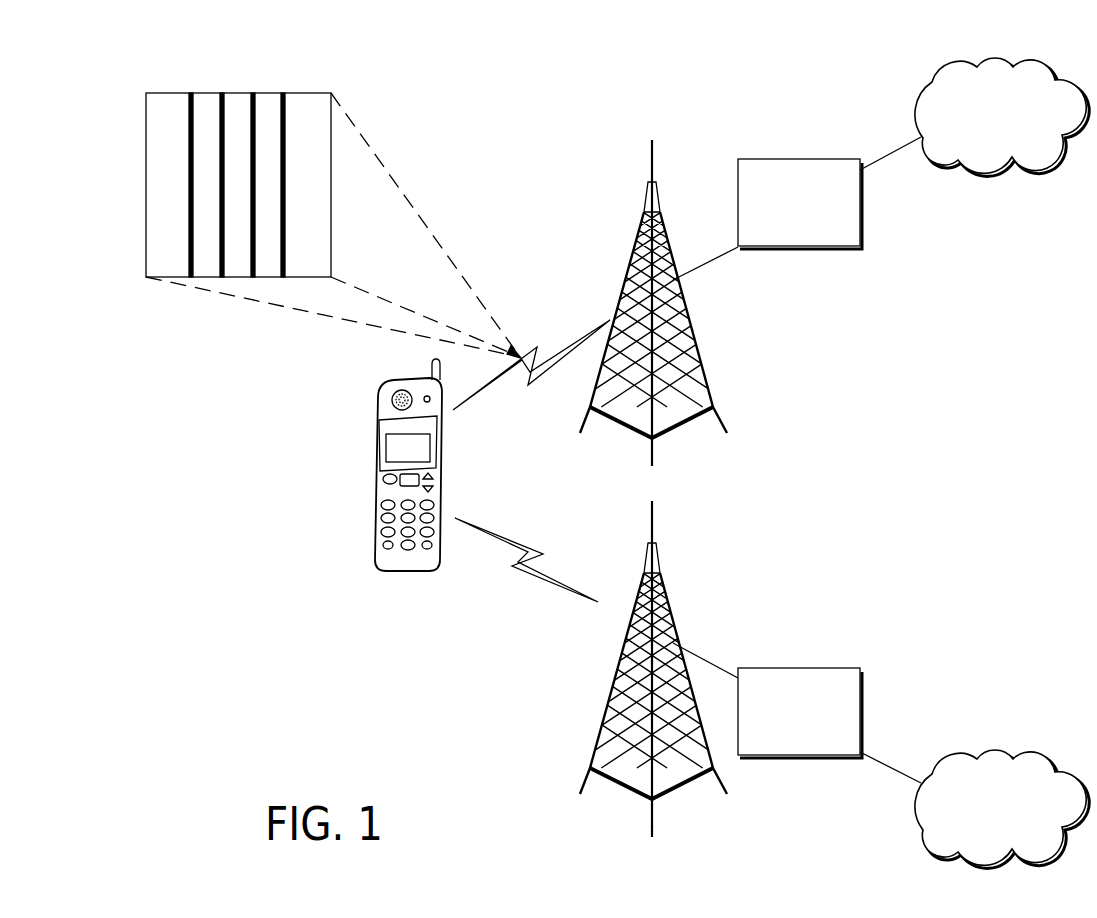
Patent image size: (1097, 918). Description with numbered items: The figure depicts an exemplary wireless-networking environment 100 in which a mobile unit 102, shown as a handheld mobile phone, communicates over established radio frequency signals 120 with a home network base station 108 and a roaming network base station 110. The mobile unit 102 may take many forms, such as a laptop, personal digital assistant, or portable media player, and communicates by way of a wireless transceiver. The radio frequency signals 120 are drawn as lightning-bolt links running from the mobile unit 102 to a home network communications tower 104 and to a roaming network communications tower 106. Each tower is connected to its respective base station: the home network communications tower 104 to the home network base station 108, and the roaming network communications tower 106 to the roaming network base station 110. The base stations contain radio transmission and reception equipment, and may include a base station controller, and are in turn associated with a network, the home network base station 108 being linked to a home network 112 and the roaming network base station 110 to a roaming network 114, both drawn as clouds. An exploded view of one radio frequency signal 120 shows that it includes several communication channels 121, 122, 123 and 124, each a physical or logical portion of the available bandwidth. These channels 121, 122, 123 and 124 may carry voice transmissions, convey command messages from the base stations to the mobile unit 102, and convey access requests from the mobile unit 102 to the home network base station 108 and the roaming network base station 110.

The wireless-networking environment 100 is at (100, 537).
The mobile unit 102 is at (375, 477).
The home network communications tower 104 is at (646, 196).
The roaming network communications tower 106 is at (646, 566).
The home network base station 108 is at (797, 159).
The roaming network base station 110 is at (797, 668).
The home network 112 is at (992, 62).
The roaming network 114 is at (992, 760).
The radio frequency signals 120 is at (146, 104).
The communication channel 121 is at (195, 110).
The communication channel 122 is at (224, 110).
The communication channel 123 is at (255, 110).
The communication channel 124 is at (286, 108).